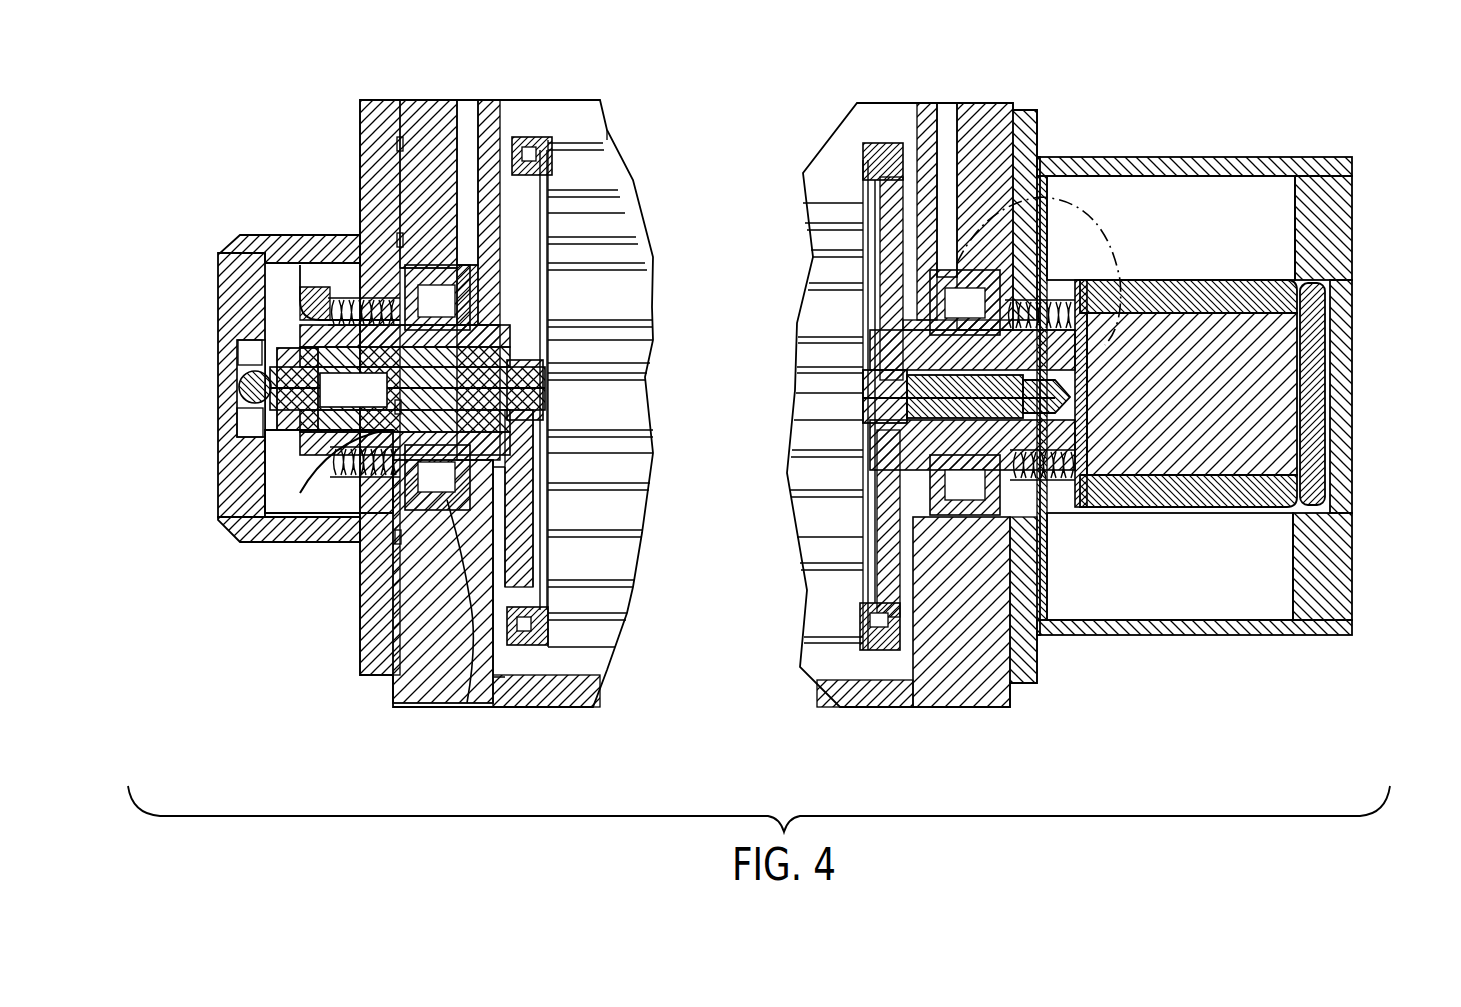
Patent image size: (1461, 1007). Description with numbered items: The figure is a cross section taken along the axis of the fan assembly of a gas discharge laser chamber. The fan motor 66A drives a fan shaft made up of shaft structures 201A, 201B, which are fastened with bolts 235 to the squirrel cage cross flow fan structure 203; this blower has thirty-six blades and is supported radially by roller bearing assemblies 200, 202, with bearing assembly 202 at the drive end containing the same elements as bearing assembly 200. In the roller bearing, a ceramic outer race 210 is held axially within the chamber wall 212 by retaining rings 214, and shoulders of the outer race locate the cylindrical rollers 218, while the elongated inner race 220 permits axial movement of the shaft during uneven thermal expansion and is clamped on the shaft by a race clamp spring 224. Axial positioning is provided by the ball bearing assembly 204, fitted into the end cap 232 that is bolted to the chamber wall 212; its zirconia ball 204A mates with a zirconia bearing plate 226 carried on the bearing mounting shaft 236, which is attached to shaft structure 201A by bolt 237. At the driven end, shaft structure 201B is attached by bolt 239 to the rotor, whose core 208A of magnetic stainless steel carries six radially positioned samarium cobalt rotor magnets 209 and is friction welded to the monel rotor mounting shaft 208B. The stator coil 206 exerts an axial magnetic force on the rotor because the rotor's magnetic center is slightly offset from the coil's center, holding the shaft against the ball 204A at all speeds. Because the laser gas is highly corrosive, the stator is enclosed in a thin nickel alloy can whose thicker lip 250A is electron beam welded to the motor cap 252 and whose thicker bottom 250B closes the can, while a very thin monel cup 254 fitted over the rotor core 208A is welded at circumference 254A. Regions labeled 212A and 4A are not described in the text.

The roller bearing assembly 200 is at (297, 587).
The shaft structure 201A is at (507, 197).
The shaft structure 201B is at (900, 190).
The roller bearing assembly 202 is at (1063, 665).
The squirrel cage cross flow fan structure 203 is at (593, 134).
The ball bearing assembly 204 is at (210, 363).
The zirconia ball 204A is at (235, 397).
The stator coil 206 is at (1287, 198).
The core 208A is at (1263, 353).
The rotor mounting shaft 208B is at (1080, 513).
The rotor magnets 209 is at (1270, 490).
The outer race 210 is at (400, 605).
The chamber wall 212 is at (425, 707).
The bearing sleeve 212A is at (400, 142).
The retaining rings 214 is at (380, 558).
The cylindrical rollers 218 is at (467, 703).
The inner race 220 is at (407, 297).
The race clamp spring 224 is at (350, 490).
The zirconia bearing plate 226 is at (300, 470).
The end cap 232 is at (280, 237).
The bolts 235 is at (870, 143).
The bearing mounting shaft 236 is at (302, 303).
The bolt 237 is at (545, 368).
The bolt 239 is at (905, 440).
The lip 250A is at (1045, 200).
The bottom 250B is at (1322, 382).
The motor cap 252 is at (1265, 156).
The monel cup 254 is at (1260, 513).
The circumference 254A is at (1080, 513).
The fan motor 66A is at (1230, 297).
The rotation direction 4A is at (1110, 331).